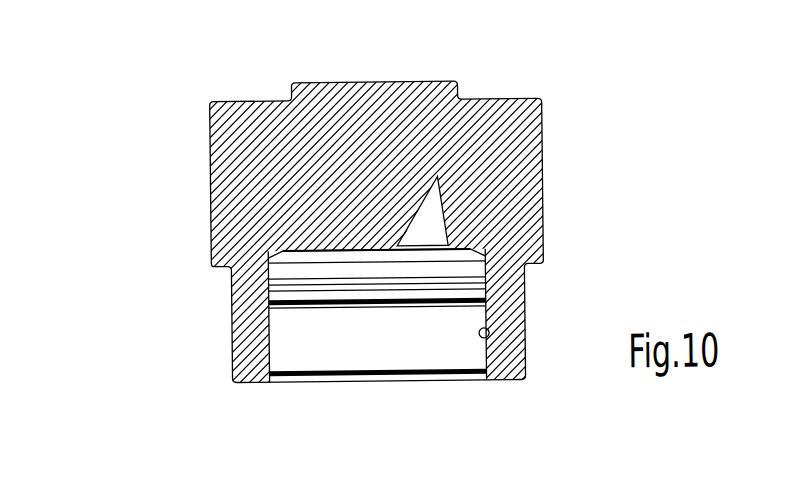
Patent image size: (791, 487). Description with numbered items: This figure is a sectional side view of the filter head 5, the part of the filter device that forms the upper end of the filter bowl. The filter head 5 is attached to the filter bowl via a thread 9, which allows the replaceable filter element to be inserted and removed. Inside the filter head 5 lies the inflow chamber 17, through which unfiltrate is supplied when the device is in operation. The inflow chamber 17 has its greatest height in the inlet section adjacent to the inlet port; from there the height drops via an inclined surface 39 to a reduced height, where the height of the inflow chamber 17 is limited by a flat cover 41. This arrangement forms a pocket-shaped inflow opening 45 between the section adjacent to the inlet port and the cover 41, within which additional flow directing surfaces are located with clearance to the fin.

The filter head 5 is at (395, 213).
The thread 9 is at (500, 339).
The inflow chamber 17 is at (320, 257).
The inclined surface 39 is at (397, 246).
The flat cover 41 is at (372, 246).
The pocket-shaped inflow opening 45 is at (430, 221).